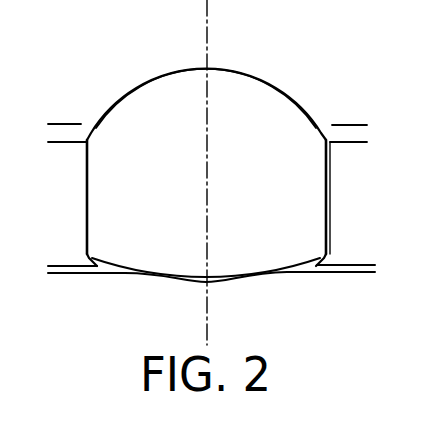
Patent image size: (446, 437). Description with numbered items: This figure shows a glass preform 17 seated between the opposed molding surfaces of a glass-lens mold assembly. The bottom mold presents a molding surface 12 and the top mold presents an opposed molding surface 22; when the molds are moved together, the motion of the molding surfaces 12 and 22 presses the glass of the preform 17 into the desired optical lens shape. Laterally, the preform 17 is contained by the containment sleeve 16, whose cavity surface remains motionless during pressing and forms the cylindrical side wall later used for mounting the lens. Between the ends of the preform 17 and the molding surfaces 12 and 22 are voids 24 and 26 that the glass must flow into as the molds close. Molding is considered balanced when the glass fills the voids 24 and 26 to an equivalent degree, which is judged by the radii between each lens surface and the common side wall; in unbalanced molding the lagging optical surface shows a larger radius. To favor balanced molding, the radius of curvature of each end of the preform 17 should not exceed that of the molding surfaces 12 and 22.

The molding surface 12 is at (253, 279).
The containment sleeve 16 is at (362, 203).
The glass preform 17 is at (99, 130).
The molding surface 22 is at (303, 101).
The void 24 is at (325, 124).
The void 26 is at (311, 267).